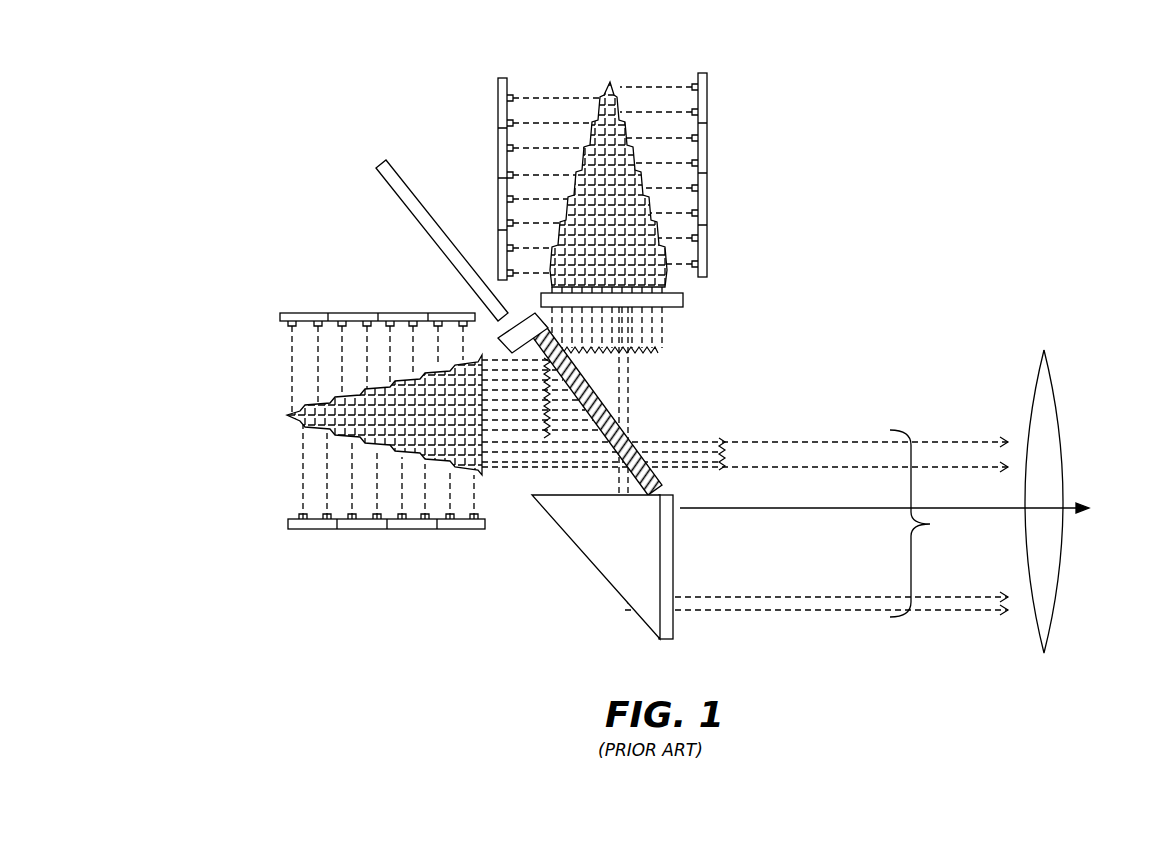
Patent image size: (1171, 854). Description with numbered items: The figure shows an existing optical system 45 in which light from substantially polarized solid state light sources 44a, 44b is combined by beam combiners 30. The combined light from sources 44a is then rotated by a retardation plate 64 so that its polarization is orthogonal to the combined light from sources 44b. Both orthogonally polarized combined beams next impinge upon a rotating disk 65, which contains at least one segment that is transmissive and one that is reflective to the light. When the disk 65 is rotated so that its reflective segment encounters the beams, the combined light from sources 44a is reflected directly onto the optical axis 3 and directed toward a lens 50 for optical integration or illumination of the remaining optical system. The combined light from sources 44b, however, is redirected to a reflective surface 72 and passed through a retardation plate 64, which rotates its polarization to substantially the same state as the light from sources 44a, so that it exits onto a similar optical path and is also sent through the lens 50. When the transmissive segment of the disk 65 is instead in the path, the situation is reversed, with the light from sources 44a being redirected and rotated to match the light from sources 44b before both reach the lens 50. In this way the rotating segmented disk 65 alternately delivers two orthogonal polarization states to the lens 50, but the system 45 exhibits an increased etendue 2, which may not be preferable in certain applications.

The optical system 45 is at (206, 137).
The beam combiner 30 is at (609, 81).
The solid state light sources 44a is at (498, 212).
The solid state light sources 44b is at (385, 312).
The rotating disk 65 is at (378, 160).
The retardation plate 64 is at (687, 298).
The reflective surface 72 is at (583, 558).
The lens 50 is at (1047, 352).
The etendue 2 is at (919, 523).
The optical axis 3 is at (1083, 500).